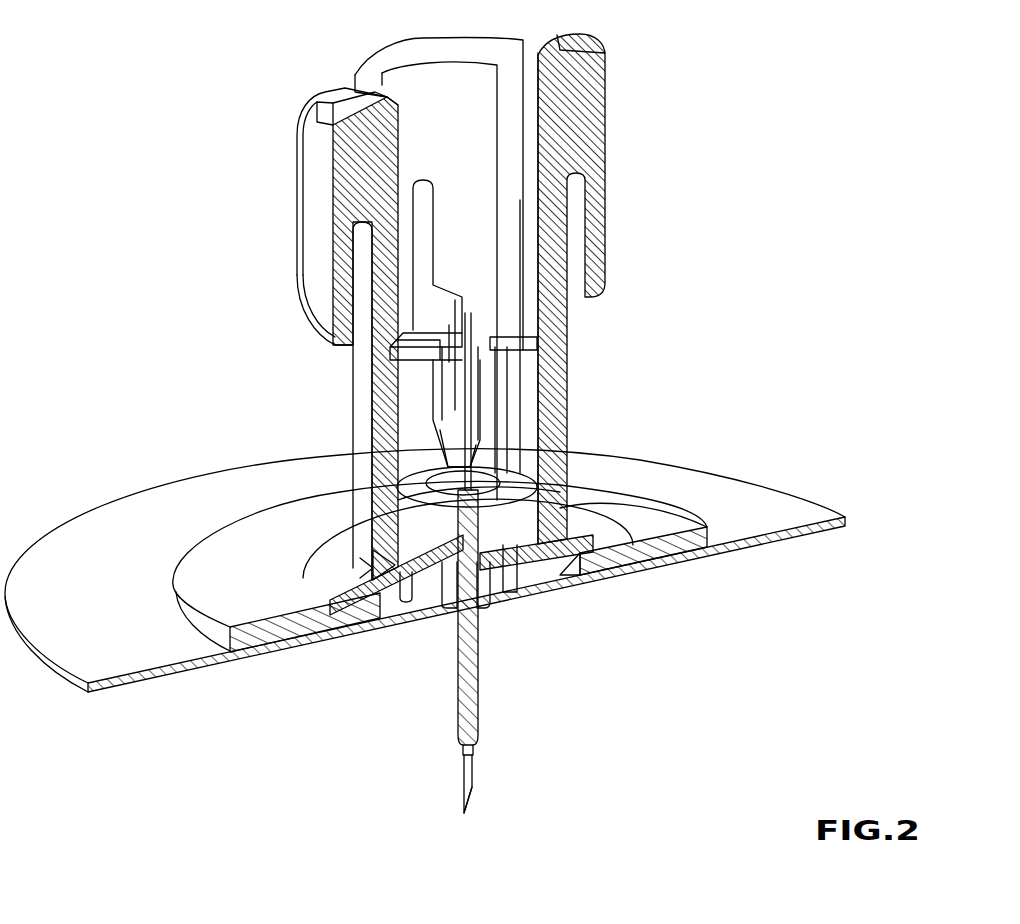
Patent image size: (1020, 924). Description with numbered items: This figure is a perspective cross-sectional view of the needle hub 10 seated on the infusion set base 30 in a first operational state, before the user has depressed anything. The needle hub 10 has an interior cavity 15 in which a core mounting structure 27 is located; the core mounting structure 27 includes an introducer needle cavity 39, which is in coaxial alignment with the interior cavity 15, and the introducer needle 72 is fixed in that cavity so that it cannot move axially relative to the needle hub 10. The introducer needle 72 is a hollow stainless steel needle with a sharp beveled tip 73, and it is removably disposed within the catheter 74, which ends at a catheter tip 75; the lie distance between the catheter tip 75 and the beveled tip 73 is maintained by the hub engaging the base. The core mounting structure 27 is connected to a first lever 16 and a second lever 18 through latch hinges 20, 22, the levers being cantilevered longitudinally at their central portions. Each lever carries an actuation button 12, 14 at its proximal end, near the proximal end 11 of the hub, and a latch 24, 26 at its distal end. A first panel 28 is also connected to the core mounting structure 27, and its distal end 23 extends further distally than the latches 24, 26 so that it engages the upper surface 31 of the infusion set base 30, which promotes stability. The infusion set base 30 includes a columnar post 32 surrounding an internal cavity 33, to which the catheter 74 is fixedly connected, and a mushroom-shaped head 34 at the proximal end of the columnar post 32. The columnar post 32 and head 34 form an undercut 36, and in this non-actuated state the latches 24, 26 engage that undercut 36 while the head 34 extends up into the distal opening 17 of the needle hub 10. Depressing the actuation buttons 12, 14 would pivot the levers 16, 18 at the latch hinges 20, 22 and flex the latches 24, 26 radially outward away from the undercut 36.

The needle hub 10 is at (486, 422).
The proximal end 11 is at (486, 322).
The first actuation button 12 is at (310, 212).
The second actuation button 14 is at (607, 143).
The interior cavity 15 is at (465, 217).
The first lever 16 is at (363, 427).
The distal opening 17 is at (545, 488).
The second lever 18 is at (560, 388).
The first latch hinge 20 is at (368, 396).
The second latch hinge 22 is at (537, 357).
The distal end of first panel 23 is at (368, 566).
The first latch 24 is at (405, 612).
The second latch 26 is at (587, 577).
The core mounting structure 27 is at (440, 428).
The first panel 28 is at (432, 58).
The infusion set base 30 is at (735, 500).
The upper surface 31 is at (643, 517).
The columnar post 32 is at (433, 590).
The internal cavity 33 is at (478, 596).
The head 34 is at (420, 503).
The undercut 36 is at (555, 512).
The introducer needle cavity 39 is at (482, 434).
The introducer needle 72 is at (472, 790).
The beveled tip 73 is at (462, 805).
The catheter 74 is at (478, 710).
The catheter tip 75 is at (460, 750).